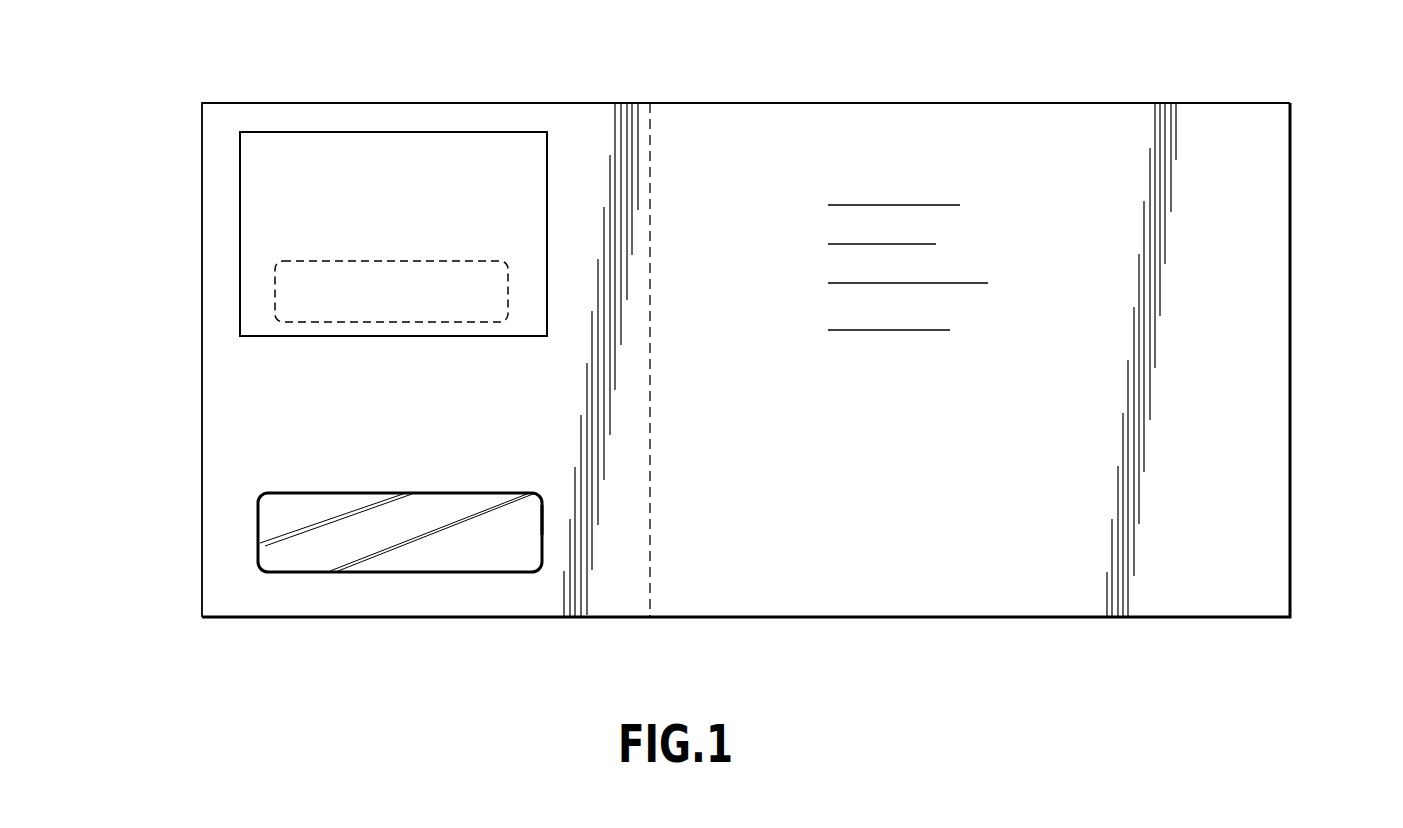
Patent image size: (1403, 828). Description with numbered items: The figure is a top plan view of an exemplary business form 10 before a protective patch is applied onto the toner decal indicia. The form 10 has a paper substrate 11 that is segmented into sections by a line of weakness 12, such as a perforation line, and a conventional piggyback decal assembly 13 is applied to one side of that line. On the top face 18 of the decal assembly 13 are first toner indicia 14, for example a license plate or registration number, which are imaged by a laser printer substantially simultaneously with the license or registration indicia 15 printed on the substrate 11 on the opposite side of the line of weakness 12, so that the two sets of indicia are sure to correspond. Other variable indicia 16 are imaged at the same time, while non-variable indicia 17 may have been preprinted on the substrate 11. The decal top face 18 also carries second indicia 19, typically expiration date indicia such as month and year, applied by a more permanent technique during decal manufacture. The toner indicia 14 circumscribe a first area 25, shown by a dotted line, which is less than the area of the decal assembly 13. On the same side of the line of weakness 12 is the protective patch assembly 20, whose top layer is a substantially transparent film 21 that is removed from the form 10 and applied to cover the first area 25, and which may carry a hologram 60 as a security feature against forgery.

The business form 10 is at (1210, 648).
The paper substrate 11 is at (725, 139).
The line of weakness 12 is at (650, 385).
The piggyback decal assembly 13 is at (270, 117).
The first toner indicia 14 is at (250, 278).
The license or registration indicia 15 is at (966, 229).
The variable indicia 16 is at (893, 162).
The non-variable indicia 17 is at (1234, 577).
The top face of decal assembly 18 is at (527, 224).
The second indicia 19 is at (240, 166).
The protective patch assembly 20 is at (240, 559).
The substantially transparent film 21 is at (527, 525).
The first area 25 is at (388, 322).
The hologram 60 is at (332, 574).